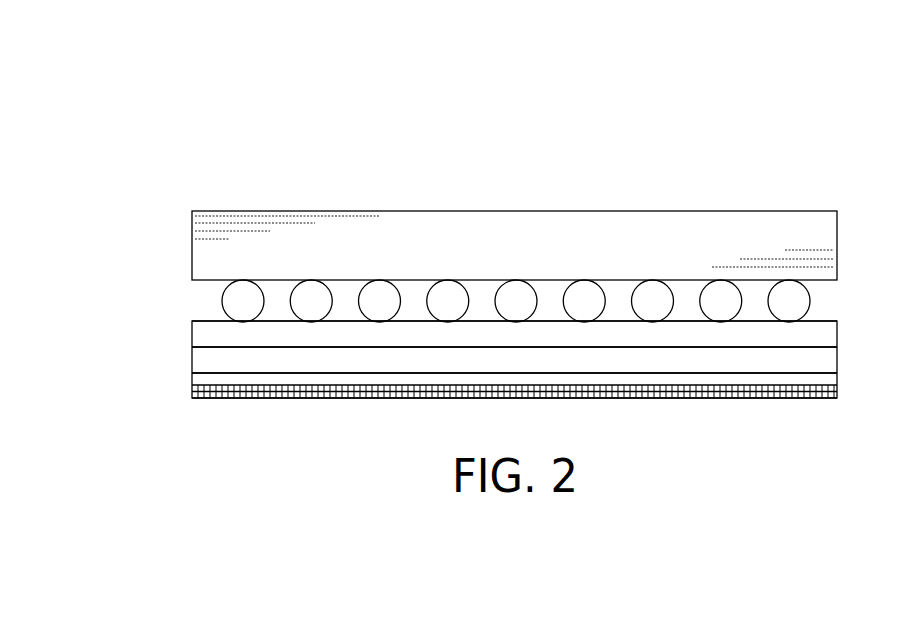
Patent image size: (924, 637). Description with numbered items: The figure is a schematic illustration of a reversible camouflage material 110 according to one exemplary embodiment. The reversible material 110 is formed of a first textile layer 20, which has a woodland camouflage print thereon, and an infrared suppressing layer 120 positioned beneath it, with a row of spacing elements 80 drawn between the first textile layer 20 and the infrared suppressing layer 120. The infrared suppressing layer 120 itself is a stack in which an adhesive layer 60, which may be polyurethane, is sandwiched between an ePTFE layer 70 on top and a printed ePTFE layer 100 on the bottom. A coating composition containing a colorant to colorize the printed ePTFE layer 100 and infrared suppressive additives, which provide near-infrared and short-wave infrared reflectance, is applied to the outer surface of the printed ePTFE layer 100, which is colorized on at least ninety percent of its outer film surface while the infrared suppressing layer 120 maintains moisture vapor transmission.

The reversible material 110 is at (729, 112).
The first textile layer 20 is at (837, 228).
The spacer balls 80 is at (810, 301).
The infrared suppressing layer 120 is at (850, 320).
The ePTFE layer 70 is at (192, 336).
The adhesive layer 60 is at (192, 361).
The printed ePTFE layer 100 is at (181, 373).